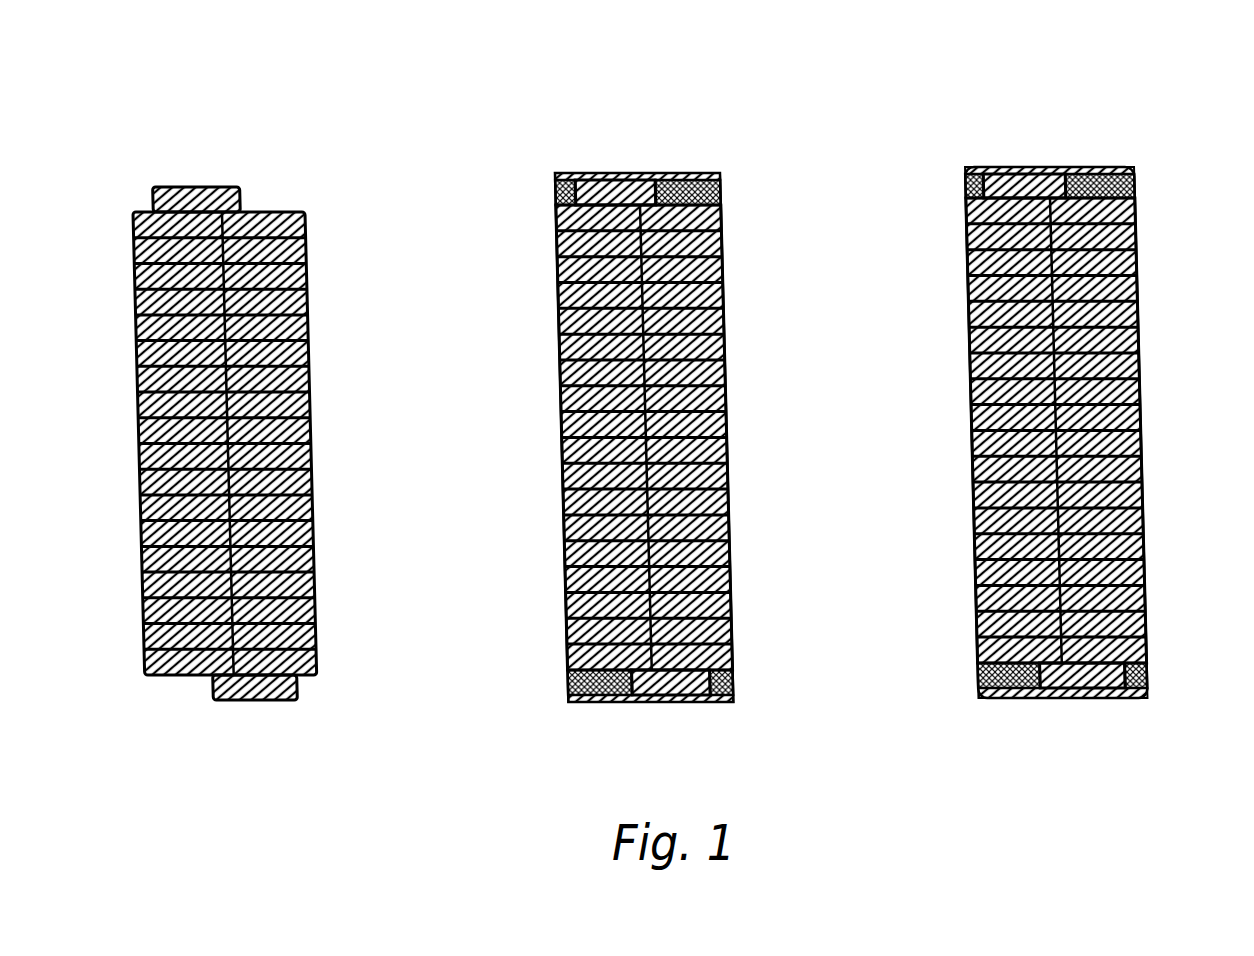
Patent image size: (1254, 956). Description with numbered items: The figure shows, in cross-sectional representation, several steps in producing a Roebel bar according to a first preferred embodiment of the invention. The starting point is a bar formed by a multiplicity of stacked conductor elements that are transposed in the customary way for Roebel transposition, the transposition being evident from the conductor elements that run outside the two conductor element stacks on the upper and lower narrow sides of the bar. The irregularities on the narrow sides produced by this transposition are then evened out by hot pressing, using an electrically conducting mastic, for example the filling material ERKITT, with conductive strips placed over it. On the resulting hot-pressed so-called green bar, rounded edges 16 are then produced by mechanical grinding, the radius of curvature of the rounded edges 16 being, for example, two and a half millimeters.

The rounded edges 16 is at (950, 155).